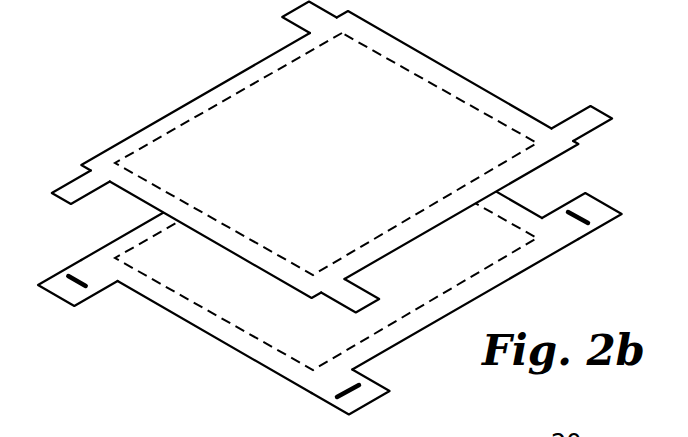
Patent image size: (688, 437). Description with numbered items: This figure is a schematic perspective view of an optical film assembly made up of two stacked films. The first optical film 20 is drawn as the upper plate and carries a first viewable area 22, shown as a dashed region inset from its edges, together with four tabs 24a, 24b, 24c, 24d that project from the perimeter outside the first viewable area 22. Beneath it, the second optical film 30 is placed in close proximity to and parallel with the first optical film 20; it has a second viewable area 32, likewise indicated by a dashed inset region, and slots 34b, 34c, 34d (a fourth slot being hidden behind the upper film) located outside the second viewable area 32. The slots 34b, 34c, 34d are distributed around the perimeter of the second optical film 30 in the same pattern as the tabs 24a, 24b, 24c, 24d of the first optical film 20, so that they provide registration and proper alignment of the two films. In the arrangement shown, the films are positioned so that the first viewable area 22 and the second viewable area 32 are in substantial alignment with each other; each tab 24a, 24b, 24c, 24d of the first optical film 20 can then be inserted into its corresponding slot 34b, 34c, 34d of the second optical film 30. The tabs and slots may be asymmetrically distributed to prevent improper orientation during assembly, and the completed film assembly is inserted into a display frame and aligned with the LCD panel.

The first optical film 20 is at (226, 132).
The first viewable area 22 is at (326, 154).
The tab 24a is at (284, 14).
The tab 24b is at (58, 187).
The tab 24c is at (366, 303).
The tab 24d is at (563, 121).
The second optical film 30 is at (245, 306).
The second viewable area 32 is at (512, 257).
The slot 34b is at (83, 287).
The slot 34c is at (345, 400).
The slot 34d is at (580, 214).